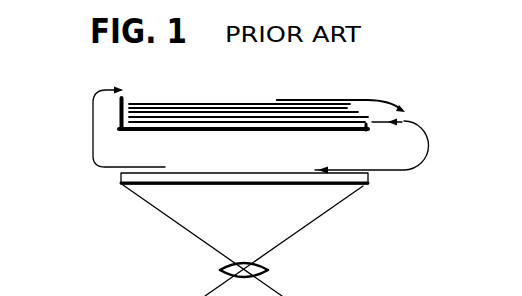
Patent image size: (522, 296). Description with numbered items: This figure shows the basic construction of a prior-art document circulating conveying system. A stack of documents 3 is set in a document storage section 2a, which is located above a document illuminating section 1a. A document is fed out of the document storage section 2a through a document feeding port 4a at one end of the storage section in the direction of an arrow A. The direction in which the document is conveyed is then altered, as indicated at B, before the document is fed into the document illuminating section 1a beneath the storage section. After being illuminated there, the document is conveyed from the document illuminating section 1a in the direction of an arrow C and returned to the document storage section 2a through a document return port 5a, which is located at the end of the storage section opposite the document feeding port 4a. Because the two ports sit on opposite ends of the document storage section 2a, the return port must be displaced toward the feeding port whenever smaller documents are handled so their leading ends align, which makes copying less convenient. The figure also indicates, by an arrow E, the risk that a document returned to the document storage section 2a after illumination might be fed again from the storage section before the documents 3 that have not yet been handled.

The document illuminating section 1a is at (114, 178).
The document storage section 2a is at (173, 136).
The documents 3 is at (349, 110).
The document feeding port 4a is at (372, 128).
The document return port 5a is at (130, 90).
The arrow A is at (387, 122).
The direction change B is at (430, 143).
The arrow C is at (93, 137).
The arrow E is at (294, 99).